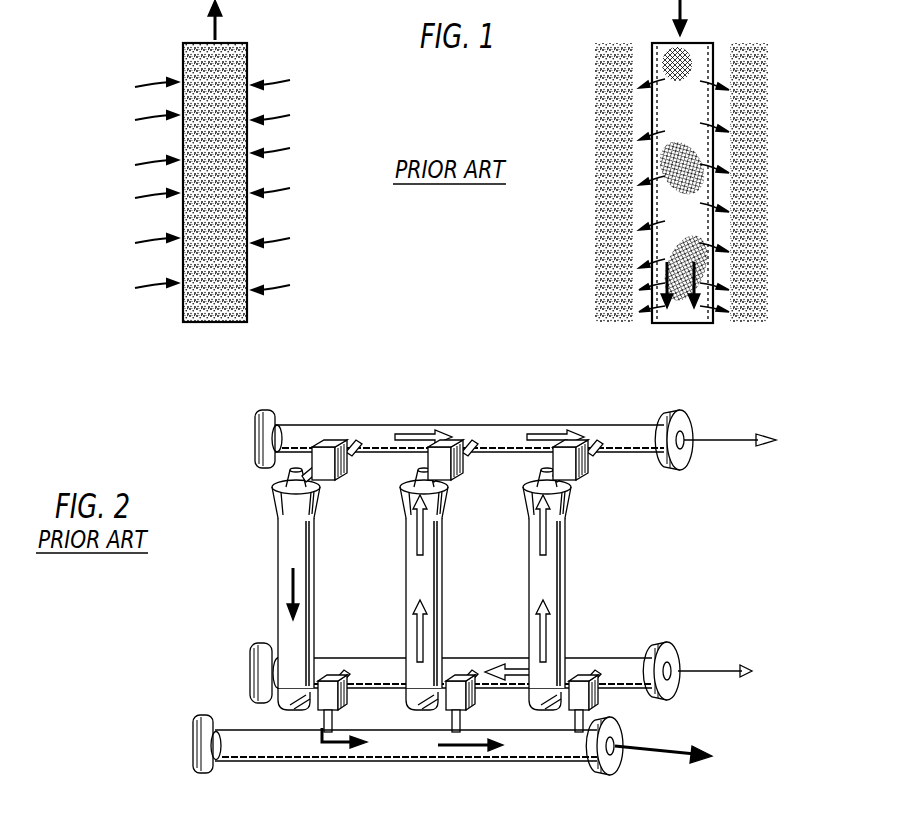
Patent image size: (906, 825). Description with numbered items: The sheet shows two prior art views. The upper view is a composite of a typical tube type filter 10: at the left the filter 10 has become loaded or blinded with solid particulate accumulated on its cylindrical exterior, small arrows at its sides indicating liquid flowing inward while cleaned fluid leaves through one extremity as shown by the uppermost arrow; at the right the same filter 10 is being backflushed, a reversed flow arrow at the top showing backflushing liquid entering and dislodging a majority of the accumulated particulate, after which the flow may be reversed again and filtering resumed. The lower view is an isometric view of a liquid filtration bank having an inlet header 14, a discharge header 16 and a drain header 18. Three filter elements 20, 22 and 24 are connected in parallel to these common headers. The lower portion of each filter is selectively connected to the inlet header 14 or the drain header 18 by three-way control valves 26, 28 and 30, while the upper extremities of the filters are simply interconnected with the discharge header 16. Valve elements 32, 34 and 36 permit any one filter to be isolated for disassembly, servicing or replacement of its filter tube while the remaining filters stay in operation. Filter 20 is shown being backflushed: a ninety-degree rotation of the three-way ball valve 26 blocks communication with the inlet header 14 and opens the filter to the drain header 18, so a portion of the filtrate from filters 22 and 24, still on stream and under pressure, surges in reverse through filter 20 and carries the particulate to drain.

In FIG. 1, the tube type filter 10 is at (266, 62).
In FIG. 2, the inlet header 14 is at (631, 660).
In FIG. 2, the discharge header 16 is at (640, 423).
In FIG. 2, the drain header 18 is at (553, 752).
In FIG. 2, the filter element 20 is at (282, 578).
In FIG. 2, the filter element 22 is at (432, 577).
In FIG. 2, the filter element 24 is at (560, 577).
In FIG. 2, the three-way control valve 26 is at (340, 702).
In FIG. 2, the three-way control valve 28 is at (462, 703).
In FIG. 2, the three-way control valve 30 is at (595, 702).
In FIG. 2, the valve element 32 is at (326, 447).
In FIG. 2, the valve element 34 is at (457, 450).
In FIG. 2, the valve element 36 is at (560, 452).